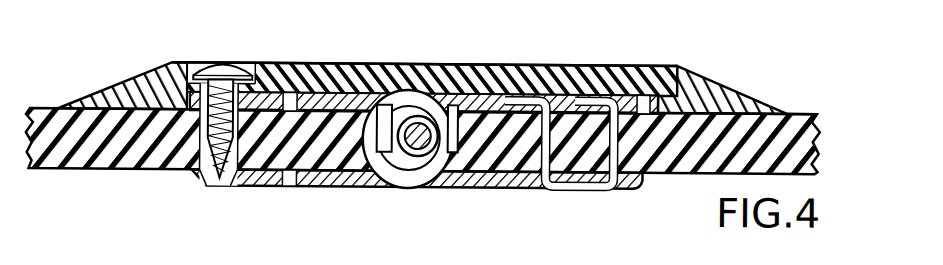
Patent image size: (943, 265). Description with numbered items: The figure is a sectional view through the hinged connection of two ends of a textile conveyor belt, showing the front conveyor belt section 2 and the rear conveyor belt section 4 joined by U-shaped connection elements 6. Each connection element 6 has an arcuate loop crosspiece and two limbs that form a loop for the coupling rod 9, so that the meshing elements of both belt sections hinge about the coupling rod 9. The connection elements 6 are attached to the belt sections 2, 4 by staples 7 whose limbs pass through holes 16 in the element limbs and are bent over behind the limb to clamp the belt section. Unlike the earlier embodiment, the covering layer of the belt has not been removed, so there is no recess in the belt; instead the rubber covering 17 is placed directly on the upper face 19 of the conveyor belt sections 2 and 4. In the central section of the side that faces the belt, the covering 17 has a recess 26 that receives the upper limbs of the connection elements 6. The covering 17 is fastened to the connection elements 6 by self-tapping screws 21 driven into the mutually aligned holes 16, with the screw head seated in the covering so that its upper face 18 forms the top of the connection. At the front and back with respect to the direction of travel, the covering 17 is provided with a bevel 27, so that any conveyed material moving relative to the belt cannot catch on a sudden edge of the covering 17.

The front conveyor belt section 2 is at (666, 191).
The rear conveyor belt section 4 is at (98, 184).
The connection element 6 is at (332, 197).
The staple 7 is at (584, 198).
The coupling rod 9 is at (418, 142).
The holes 16 is at (423, 178).
The covering 17 is at (518, 48).
The upper face of the covering 18 is at (382, 60).
The upper face of the conveyor belt section 19 is at (808, 102).
The screw 21 is at (245, 48).
The recess 26 is at (650, 103).
The bevel 27 is at (123, 80).